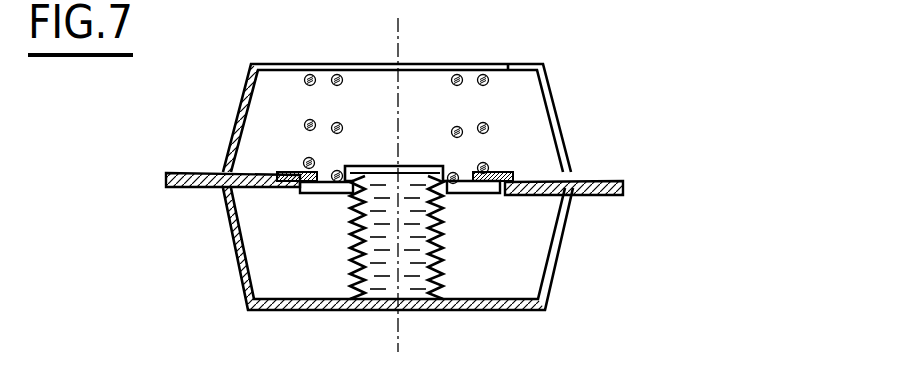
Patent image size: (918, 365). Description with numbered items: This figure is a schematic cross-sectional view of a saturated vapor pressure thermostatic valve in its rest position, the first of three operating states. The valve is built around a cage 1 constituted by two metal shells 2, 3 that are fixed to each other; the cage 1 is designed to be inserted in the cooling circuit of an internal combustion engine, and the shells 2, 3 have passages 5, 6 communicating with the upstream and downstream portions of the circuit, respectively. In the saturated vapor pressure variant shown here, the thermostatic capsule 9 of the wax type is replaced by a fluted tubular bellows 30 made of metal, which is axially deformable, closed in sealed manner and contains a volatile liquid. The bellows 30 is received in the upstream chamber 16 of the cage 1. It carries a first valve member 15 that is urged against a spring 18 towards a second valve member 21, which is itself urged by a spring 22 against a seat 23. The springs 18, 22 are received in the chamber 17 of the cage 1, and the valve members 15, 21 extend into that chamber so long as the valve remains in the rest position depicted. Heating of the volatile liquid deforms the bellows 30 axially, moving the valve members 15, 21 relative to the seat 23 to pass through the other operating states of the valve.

The cage 1 is at (182, 198).
The metal shell 2 is at (236, 256).
The metal shell 3 is at (240, 101).
The passage 5 is at (556, 268).
The passage 6 is at (555, 106).
The thermostatic capsule 9 is at (410, 158).
The first valve member 15 is at (305, 190).
The upstream chamber 16 is at (292, 295).
The upstream chamber 17 is at (270, 103).
The spring 18 is at (360, 66).
The second valve member 21 is at (288, 190).
The spring 22 is at (298, 80).
The seat 23 is at (276, 173).
The fluted tubular bellows 30 is at (437, 296).